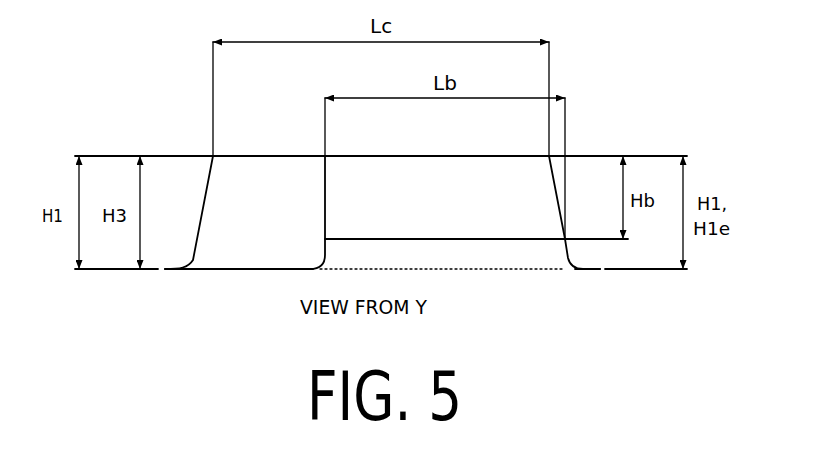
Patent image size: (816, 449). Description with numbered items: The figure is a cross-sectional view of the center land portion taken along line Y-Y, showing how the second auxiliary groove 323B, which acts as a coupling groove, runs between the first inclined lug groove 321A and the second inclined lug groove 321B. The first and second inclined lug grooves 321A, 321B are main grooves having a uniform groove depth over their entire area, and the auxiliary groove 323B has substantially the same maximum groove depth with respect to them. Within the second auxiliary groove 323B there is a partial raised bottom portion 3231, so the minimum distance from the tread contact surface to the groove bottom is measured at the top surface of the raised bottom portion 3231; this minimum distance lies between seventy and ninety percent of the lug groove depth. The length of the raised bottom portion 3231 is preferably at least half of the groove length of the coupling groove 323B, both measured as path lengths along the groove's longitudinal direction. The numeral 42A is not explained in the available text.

The top surface of convex portion 42A is at (289, 147).
The first inclined lug groove 321A is at (176, 170).
The second inclined lug groove 321B is at (601, 172).
The second auxiliary groove 323B is at (362, 168).
The raised bottom portion 3231 is at (508, 237).